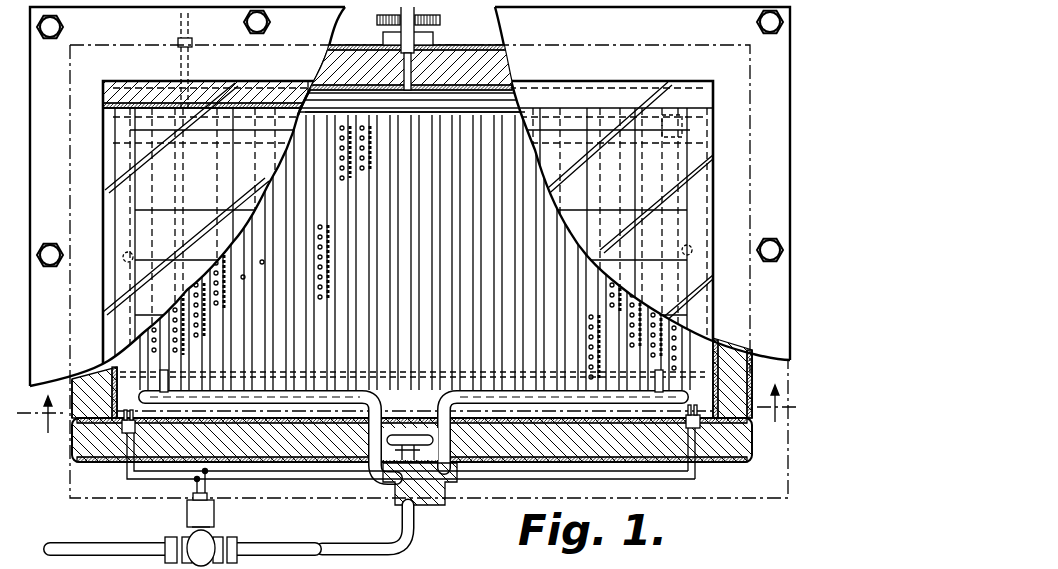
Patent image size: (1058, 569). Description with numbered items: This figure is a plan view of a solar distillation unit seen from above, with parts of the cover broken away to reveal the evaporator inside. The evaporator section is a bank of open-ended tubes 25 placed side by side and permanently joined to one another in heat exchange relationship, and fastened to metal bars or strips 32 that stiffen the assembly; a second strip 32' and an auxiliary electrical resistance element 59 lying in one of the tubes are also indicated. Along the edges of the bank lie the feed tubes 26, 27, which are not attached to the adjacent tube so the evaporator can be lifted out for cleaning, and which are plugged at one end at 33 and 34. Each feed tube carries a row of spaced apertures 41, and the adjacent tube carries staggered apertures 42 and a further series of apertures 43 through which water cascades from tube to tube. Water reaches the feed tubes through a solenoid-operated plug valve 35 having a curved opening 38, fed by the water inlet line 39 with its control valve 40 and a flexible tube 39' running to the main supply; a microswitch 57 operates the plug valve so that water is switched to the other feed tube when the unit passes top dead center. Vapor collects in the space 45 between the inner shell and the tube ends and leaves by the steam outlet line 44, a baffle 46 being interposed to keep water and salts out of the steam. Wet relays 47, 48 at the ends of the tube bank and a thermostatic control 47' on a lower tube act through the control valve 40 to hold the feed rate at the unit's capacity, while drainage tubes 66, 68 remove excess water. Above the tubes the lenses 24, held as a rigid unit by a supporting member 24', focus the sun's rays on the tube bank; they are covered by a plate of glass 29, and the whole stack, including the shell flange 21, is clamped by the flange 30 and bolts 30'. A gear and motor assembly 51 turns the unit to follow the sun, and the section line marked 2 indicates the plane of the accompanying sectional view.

The flange 21 is at (412, 288).
The section line 2- 2 is at (408, 420).
The lenses 24 is at (409, 202).
The supporting member 24' is at (409, 98).
The open-ended tubes 25 is at (384, 130).
The feed tube 26 is at (679, 390).
The feed tube 27 is at (137, 364).
The plate of glass 29 is at (255, 100).
The flange 30 is at (328, 68).
The bolts 30' is at (410, 139).
The metal bars or strips 32 is at (412, 252).
The tube plate 32' is at (415, 102).
The plug 33 is at (672, 116).
The plug 34 is at (130, 135).
The solenoid-operated plug valve 35 is at (428, 514).
The curved opening 38 is at (440, 490).
The water inlet line 39 is at (108, 533).
The flexible tube 39' is at (276, 530).
The control valve 40 is at (215, 539).
The spaced apertures 41 is at (672, 361).
The apertures 42 is at (600, 350).
The apertures 43 is at (586, 338).
The steam outlet line 44 is at (434, 38).
The collecting manifold space 45 is at (496, 95).
The baffle 46 is at (508, 107).
The wet relay 47 is at (709, 442).
The thermostatic control 47' is at (417, 397).
The wet relay 48 is at (122, 434).
The gear and motor assembly 51 is at (441, 20).
The microswitch 57 is at (410, 434).
The auxiliary electrical resistance element 59 is at (177, 42).
The drainage tube 66 is at (696, 251).
The drainage tube 68 is at (123, 253).